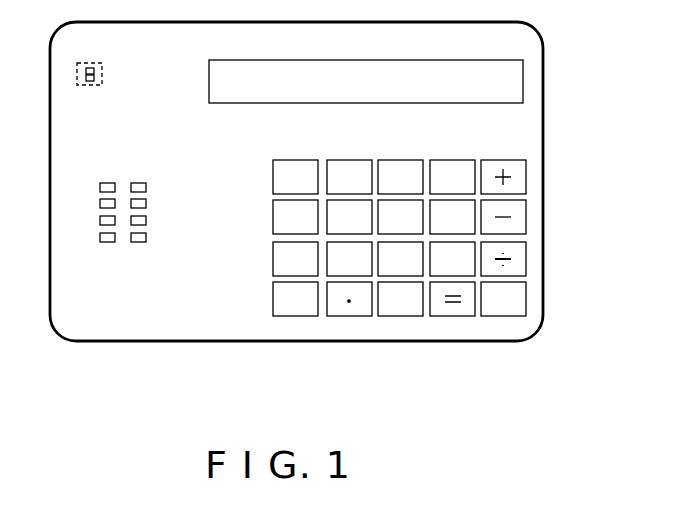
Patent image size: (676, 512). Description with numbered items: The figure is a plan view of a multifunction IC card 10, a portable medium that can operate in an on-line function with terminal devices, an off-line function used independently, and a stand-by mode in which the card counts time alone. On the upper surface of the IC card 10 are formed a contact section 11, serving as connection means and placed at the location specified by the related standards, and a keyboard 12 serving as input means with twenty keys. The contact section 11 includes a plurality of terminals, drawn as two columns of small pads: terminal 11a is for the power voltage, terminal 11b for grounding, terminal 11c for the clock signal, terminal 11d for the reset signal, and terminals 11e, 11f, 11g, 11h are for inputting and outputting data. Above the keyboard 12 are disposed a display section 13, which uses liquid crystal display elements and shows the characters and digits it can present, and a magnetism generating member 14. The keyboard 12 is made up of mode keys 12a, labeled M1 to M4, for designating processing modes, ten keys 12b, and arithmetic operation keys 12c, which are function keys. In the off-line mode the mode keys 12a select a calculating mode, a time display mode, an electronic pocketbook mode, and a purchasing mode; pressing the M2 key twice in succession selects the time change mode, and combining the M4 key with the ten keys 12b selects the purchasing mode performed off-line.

The IC card 10 is at (525, 138).
The contact section 11 is at (124, 261).
The terminal 11a is at (107, 183).
The terminal 11b is at (100, 203).
The terminal 11c is at (100, 220).
The terminal 11d is at (106, 243).
The terminal 11e is at (139, 183).
The terminal 11f is at (146, 203).
The terminal 11g is at (146, 221).
The terminal 11h is at (138, 242).
The keyboard 12 is at (401, 248).
The mode keys 12a is at (272, 260).
The ten keys 12b is at (352, 158).
The arithmetic operation keys 12c is at (526, 220).
The display section 13 is at (523, 80).
The magnetism generating member 14 is at (102, 62).